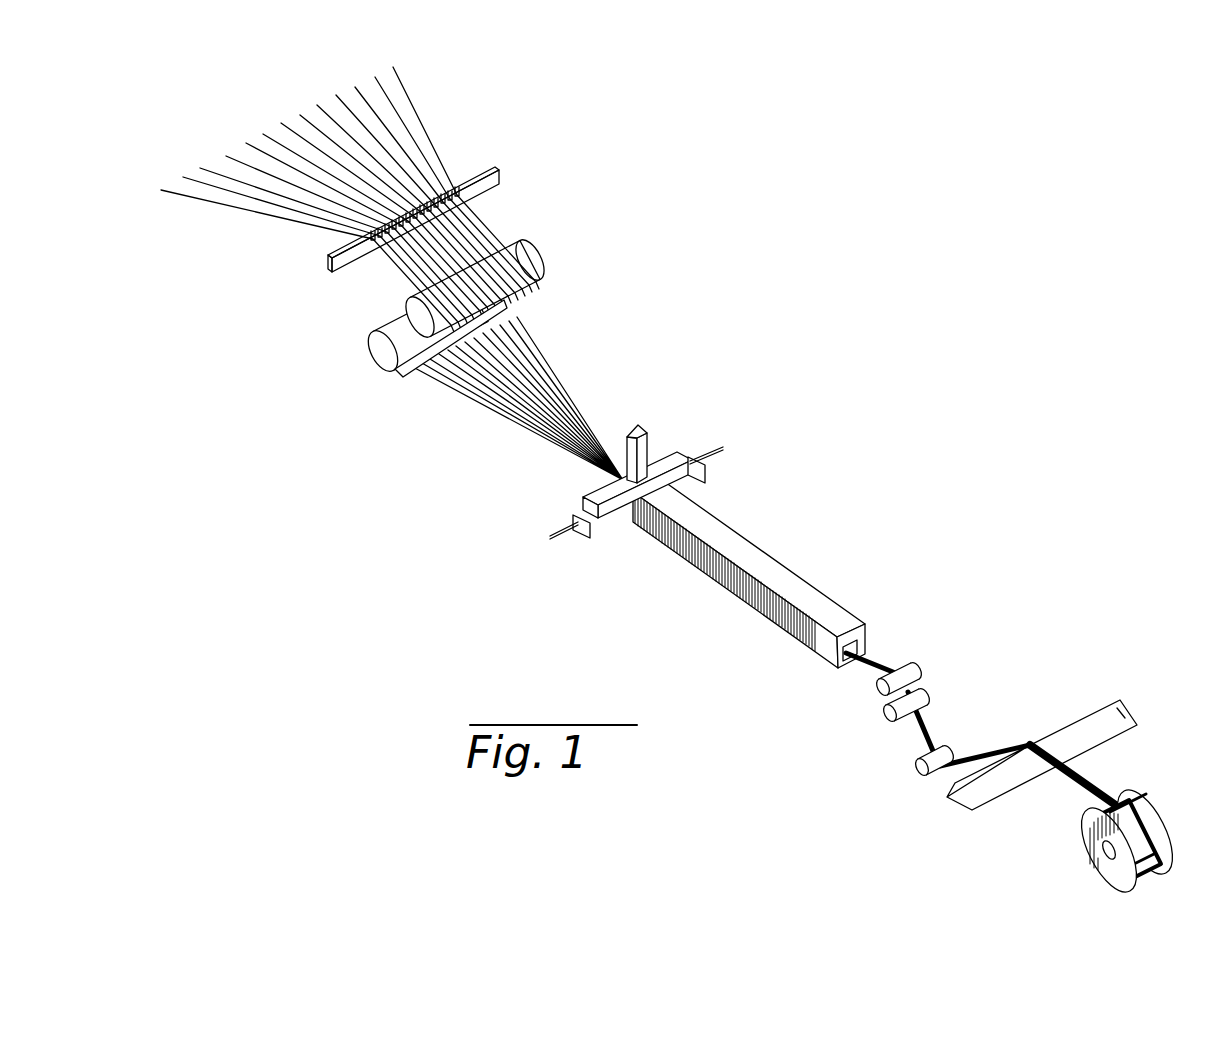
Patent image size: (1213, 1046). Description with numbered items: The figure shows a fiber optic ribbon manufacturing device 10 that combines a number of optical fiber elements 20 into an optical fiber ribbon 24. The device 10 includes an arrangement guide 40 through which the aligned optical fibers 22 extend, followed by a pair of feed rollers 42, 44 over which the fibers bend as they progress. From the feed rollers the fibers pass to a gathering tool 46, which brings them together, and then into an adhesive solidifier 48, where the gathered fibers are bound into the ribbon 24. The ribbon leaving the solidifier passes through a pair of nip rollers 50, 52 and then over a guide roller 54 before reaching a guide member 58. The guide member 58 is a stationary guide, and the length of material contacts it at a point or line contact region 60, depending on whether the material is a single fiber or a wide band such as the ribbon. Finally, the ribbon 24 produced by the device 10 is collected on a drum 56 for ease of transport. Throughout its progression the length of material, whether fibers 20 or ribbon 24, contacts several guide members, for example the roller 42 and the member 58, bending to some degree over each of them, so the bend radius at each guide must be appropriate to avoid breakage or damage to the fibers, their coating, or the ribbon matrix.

The ribbon manufacturing device 10 is at (813, 283).
The optical fiber elements 20 is at (412, 140).
The aligned optical fibers 22 is at (482, 172).
The optical fiber ribbon 24 is at (990, 745).
The arrangement guide 40 is at (500, 178).
The feed roller 42 is at (542, 263).
The feed roller 44 is at (383, 353).
The gathering tool 46 is at (698, 446).
The adhesive solidifier 48 is at (797, 573).
The nip roller 50 is at (880, 689).
The nip roller 52 is at (888, 716).
The guide roller 54 is at (921, 769).
The drum 56 is at (1097, 862).
The guide member 58 is at (1115, 717).
The contact region 60 is at (1028, 760).